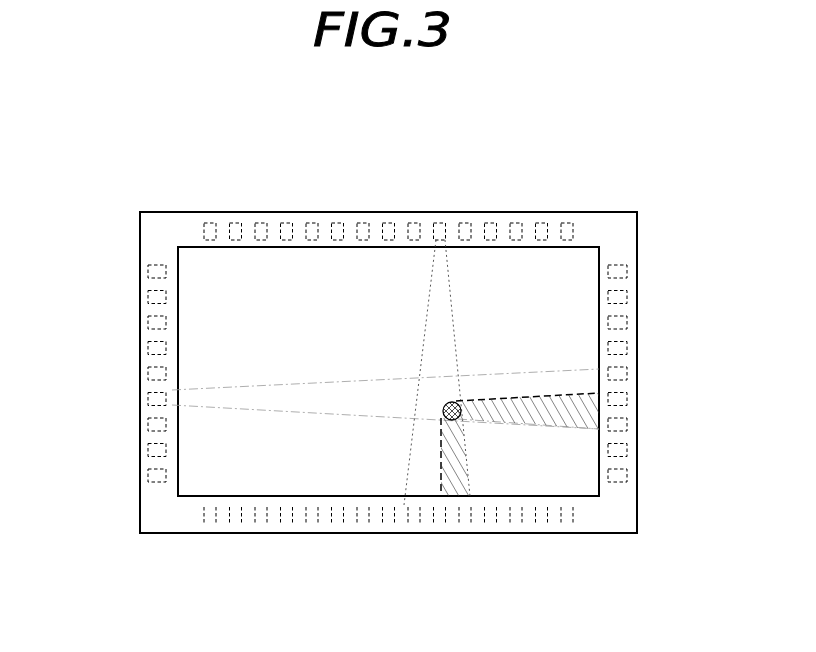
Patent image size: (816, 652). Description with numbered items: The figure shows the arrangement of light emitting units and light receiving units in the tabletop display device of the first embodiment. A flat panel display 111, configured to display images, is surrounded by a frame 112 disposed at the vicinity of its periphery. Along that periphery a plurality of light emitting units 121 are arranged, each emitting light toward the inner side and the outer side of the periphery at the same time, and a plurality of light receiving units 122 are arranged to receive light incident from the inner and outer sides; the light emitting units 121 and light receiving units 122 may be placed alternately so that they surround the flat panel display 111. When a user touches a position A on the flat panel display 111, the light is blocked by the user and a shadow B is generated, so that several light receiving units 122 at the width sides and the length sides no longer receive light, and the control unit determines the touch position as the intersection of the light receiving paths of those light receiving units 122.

The flat panel display 111 is at (585, 262).
The frame 112 is at (175, 212).
The light emitting unit 121 is at (542, 223).
The light receiving unit 122 is at (567, 523).
The position A is at (455, 403).
The shadow B is at (490, 418).